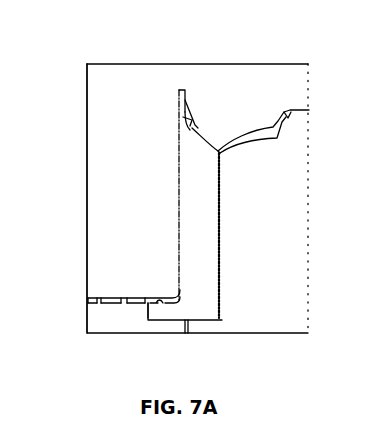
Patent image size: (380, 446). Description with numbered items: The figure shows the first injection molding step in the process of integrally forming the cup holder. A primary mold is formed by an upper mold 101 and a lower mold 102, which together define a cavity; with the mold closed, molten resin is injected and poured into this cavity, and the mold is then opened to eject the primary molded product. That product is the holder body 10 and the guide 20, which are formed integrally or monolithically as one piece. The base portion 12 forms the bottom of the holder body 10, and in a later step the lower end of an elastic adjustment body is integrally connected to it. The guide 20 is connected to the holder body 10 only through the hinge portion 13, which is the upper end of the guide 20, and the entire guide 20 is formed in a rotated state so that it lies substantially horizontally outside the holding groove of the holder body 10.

The holder body 10 is at (192, 97).
The upper mold 101 is at (130, 116).
The lower mold 102 is at (288, 240).
The base portion 12 is at (112, 305).
The hinge portion 13 is at (176, 118).
The guide 20 is at (256, 128).